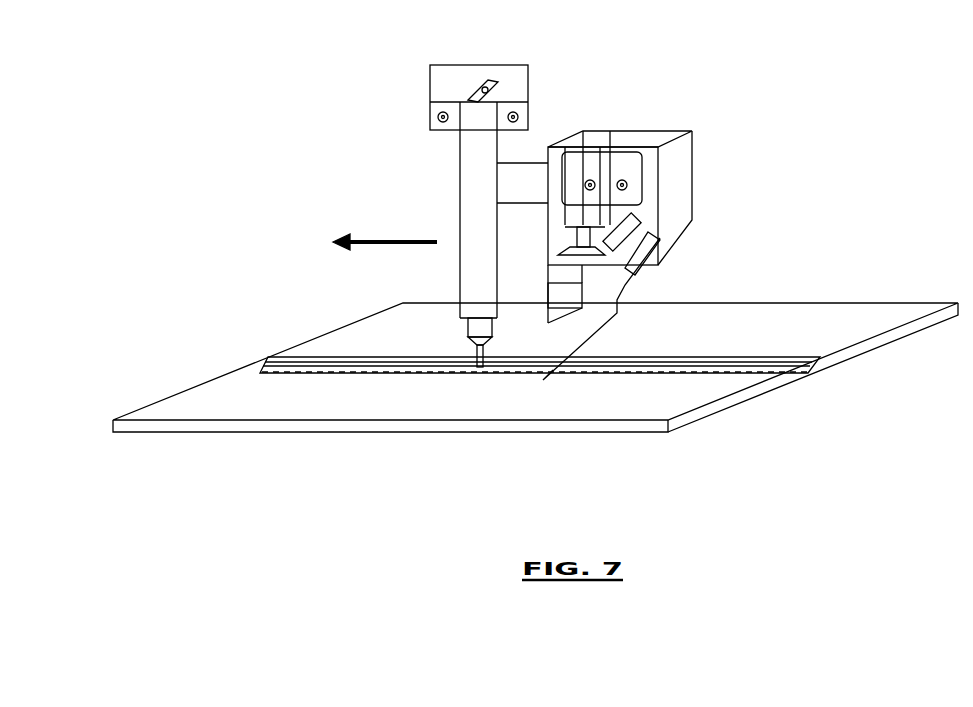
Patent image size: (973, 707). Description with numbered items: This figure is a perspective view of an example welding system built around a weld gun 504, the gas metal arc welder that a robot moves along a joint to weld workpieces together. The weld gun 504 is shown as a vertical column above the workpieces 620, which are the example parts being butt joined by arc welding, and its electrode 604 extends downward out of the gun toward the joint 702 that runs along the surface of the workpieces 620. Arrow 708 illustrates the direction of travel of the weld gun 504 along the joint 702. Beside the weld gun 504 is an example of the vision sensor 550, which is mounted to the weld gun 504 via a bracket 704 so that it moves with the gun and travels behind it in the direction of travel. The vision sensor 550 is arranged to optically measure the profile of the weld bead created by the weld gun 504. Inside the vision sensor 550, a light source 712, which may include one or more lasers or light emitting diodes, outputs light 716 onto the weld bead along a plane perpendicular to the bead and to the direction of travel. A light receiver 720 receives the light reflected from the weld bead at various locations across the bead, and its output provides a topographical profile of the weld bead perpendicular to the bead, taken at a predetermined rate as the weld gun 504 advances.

The weld gun 504 is at (480, 213).
The vision sensor 550 is at (641, 130).
The electrode 604 is at (478, 343).
The workpieces 620 is at (693, 333).
The joint 702 is at (352, 370).
The bracket 704 is at (520, 173).
The arrow 708 is at (398, 238).
The light source 712 is at (532, 387).
The light 716 is at (607, 317).
The light receiver 720 is at (597, 218).